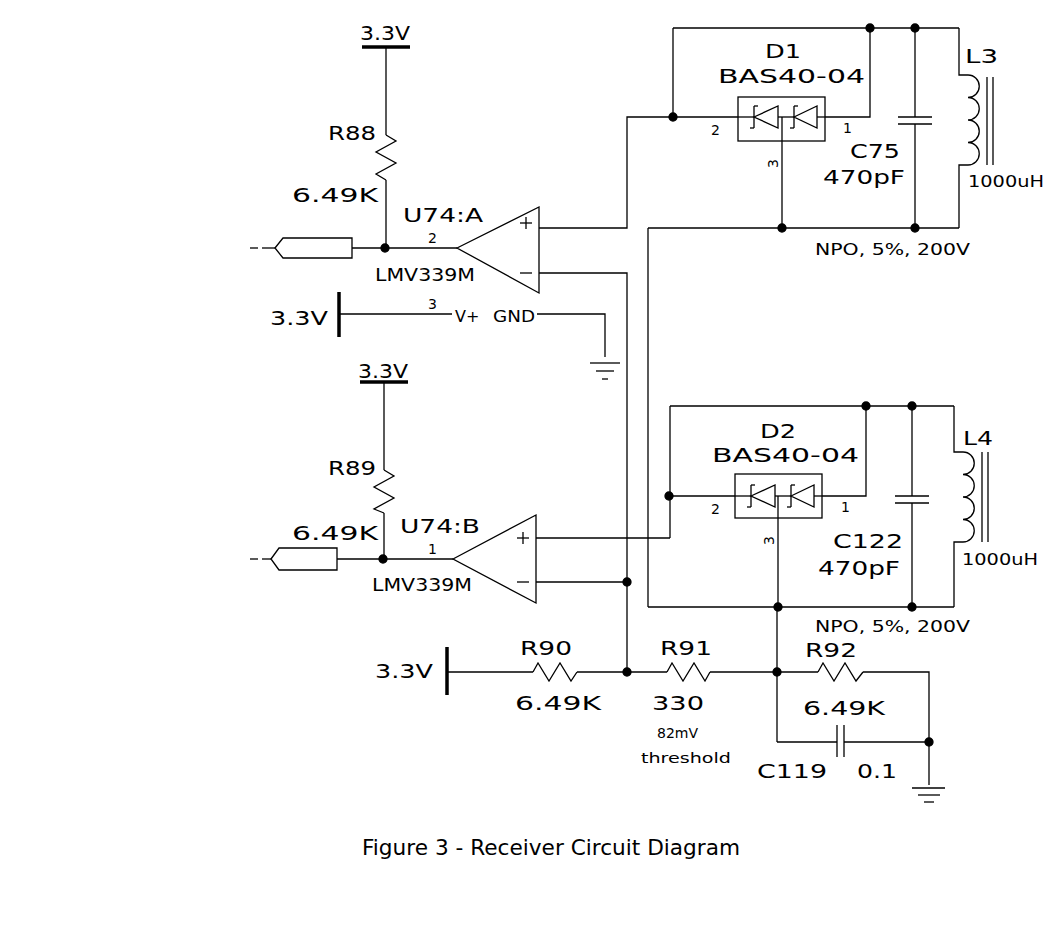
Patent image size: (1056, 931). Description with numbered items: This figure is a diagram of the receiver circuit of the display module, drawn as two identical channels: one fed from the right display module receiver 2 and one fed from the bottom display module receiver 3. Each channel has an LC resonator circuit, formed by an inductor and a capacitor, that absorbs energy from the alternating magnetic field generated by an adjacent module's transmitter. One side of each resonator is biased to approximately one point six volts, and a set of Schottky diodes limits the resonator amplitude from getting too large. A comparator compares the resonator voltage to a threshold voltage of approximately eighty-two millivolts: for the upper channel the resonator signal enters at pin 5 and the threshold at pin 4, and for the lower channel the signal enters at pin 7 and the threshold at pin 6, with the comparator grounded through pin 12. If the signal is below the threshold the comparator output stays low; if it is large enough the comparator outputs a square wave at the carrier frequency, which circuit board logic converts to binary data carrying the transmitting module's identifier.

The right display module receiver 2 is at (242, 240).
The bottom display module receiver 3 is at (238, 555).
The comparator U74:A inverting input pin 4 is at (585, 463).
The comparator U74:A non-inverting input pin 5 is at (638, 170).
The comparator U74:B inverting input pin 6 is at (581, 573).
The comparator U74:B non-inverting input pin 7 is at (604, 472).
The comparator ground pin 12 is at (578, 337).